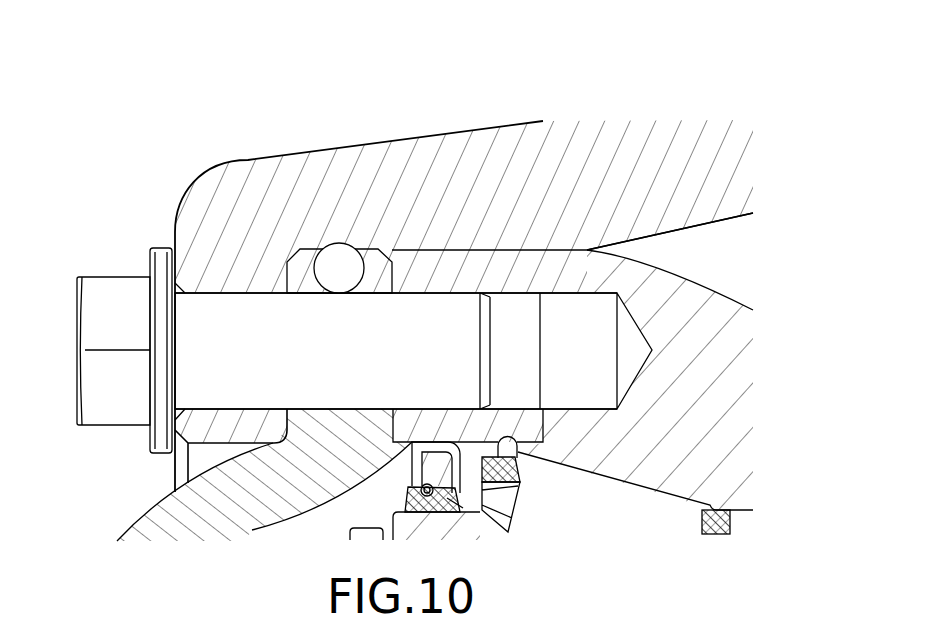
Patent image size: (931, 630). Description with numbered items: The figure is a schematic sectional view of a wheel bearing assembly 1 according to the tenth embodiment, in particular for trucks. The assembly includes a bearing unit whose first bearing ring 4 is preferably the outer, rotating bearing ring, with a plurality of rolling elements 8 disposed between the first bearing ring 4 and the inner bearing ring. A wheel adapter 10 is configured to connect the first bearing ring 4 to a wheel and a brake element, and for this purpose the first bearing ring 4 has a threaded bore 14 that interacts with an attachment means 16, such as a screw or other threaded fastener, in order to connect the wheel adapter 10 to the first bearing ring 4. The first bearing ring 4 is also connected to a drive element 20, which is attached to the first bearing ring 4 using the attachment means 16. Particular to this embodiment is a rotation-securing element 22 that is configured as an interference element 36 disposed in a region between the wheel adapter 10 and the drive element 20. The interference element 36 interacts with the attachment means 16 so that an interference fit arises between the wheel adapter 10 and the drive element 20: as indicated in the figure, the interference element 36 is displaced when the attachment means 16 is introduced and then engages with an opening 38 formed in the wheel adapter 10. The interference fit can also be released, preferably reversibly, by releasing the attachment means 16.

The wheel bearing assembly 1 is at (672, 104).
The first bearing ring 4 is at (697, 303).
The rolling elements 8 is at (566, 513).
The wheel adapter 10 is at (521, 160).
The threaded bore 14 is at (582, 302).
The attachment means 16 is at (98, 298).
The drive element 20 is at (153, 519).
The rotation-securing element 22 is at (334, 220).
The interference element 36 is at (345, 258).
The opening 38 is at (327, 243).